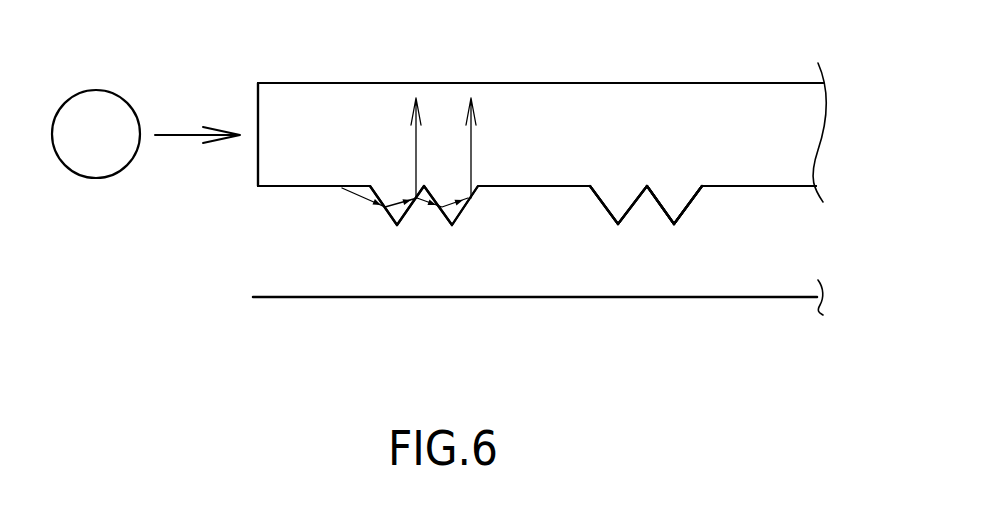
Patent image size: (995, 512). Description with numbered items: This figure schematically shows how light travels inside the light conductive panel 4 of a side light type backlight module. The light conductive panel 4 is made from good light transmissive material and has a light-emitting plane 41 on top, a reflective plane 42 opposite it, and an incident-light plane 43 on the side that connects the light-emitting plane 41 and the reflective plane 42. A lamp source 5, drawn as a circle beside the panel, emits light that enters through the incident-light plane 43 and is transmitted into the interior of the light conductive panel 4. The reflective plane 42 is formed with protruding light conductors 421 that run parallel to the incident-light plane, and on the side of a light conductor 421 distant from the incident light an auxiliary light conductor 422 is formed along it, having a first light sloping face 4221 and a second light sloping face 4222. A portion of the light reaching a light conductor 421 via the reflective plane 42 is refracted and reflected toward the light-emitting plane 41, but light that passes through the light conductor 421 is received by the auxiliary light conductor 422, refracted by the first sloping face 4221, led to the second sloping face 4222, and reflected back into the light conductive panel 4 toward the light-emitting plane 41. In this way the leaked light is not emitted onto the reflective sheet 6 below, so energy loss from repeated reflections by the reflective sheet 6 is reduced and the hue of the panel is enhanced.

The light conductive panel 4 is at (793, 58).
The light-emitting plane 41 is at (680, 82).
The reflective plane 42 is at (768, 187).
The incident-light plane 43 is at (258, 136).
The light conductor 421 is at (595, 205).
The auxiliary light conductor 422 is at (700, 203).
The first light sloping face 4221 is at (658, 207).
The second light sloping face 4222 is at (683, 213).
The lamp source 5 is at (122, 118).
The reflective sheet 6 is at (692, 298).